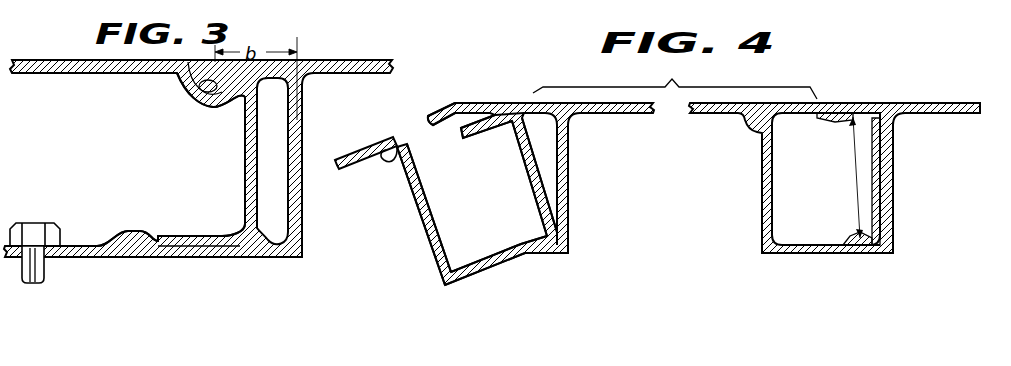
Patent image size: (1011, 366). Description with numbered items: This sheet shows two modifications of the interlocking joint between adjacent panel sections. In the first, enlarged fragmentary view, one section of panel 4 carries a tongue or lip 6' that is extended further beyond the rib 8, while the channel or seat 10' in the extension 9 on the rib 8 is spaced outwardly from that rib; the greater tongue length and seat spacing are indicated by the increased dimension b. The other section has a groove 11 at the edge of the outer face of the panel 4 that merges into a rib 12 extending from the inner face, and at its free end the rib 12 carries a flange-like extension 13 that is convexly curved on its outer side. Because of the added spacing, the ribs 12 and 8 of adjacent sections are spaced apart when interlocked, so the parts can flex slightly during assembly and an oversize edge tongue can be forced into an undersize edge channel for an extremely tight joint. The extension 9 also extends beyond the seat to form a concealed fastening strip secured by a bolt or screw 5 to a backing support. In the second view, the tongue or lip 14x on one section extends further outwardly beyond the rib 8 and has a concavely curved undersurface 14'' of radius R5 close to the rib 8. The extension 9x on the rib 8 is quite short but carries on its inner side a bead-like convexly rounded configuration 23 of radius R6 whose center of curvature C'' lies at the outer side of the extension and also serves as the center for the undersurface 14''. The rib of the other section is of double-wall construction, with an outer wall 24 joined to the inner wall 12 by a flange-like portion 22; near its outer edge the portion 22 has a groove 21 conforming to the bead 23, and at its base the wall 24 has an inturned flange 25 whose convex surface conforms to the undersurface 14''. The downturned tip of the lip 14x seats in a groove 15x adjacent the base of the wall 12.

In FIG. 3, the panel 4 is at (72, 60).
In FIG. 4, the panel 4 is at (509, 103).
In FIG. 3, the bolt 5 is at (24, 266).
In FIG. 3, the tongue or lip 6' is at (175, 81).
In FIG. 3, the rib 8 is at (303, 198).
In FIG. 4, the rib 8 is at (569, 168).
In FIG. 3, the extension 9 is at (203, 258).
In FIG. 3, the channel or seat 10' is at (139, 218).
In FIG. 3, the groove 11 is at (205, 101).
In FIG. 3, the rib 12 is at (245, 143).
In FIG. 4, the rib 12 is at (420, 217).
In FIG. 3, the flange-like extension 13 is at (207, 243).
In FIG. 4, the tongue or lip 14x is at (437, 113).
In FIG. 4, the concavely curved undersurface 14'' is at (561, 129).
In FIG. 4, the groove 15x is at (398, 141).
In FIG. 4, the groove 21 is at (547, 259).
In FIG. 4, the flange-like portion 22 is at (505, 266).
In FIG. 4, the bead-like convexly rounded profile configuration 23 is at (530, 236).
In FIG. 4, the outer wall 24 is at (524, 165).
In FIG. 4, the inturned flange or extension 25 is at (496, 129).
In FIG. 4, the extension 9x is at (566, 255).
In FIG. 4, the radius R5 is at (853, 144).
In FIG. 4, the radius R6 is at (848, 232).
In FIG. 4, the center of curvature C'' is at (869, 268).